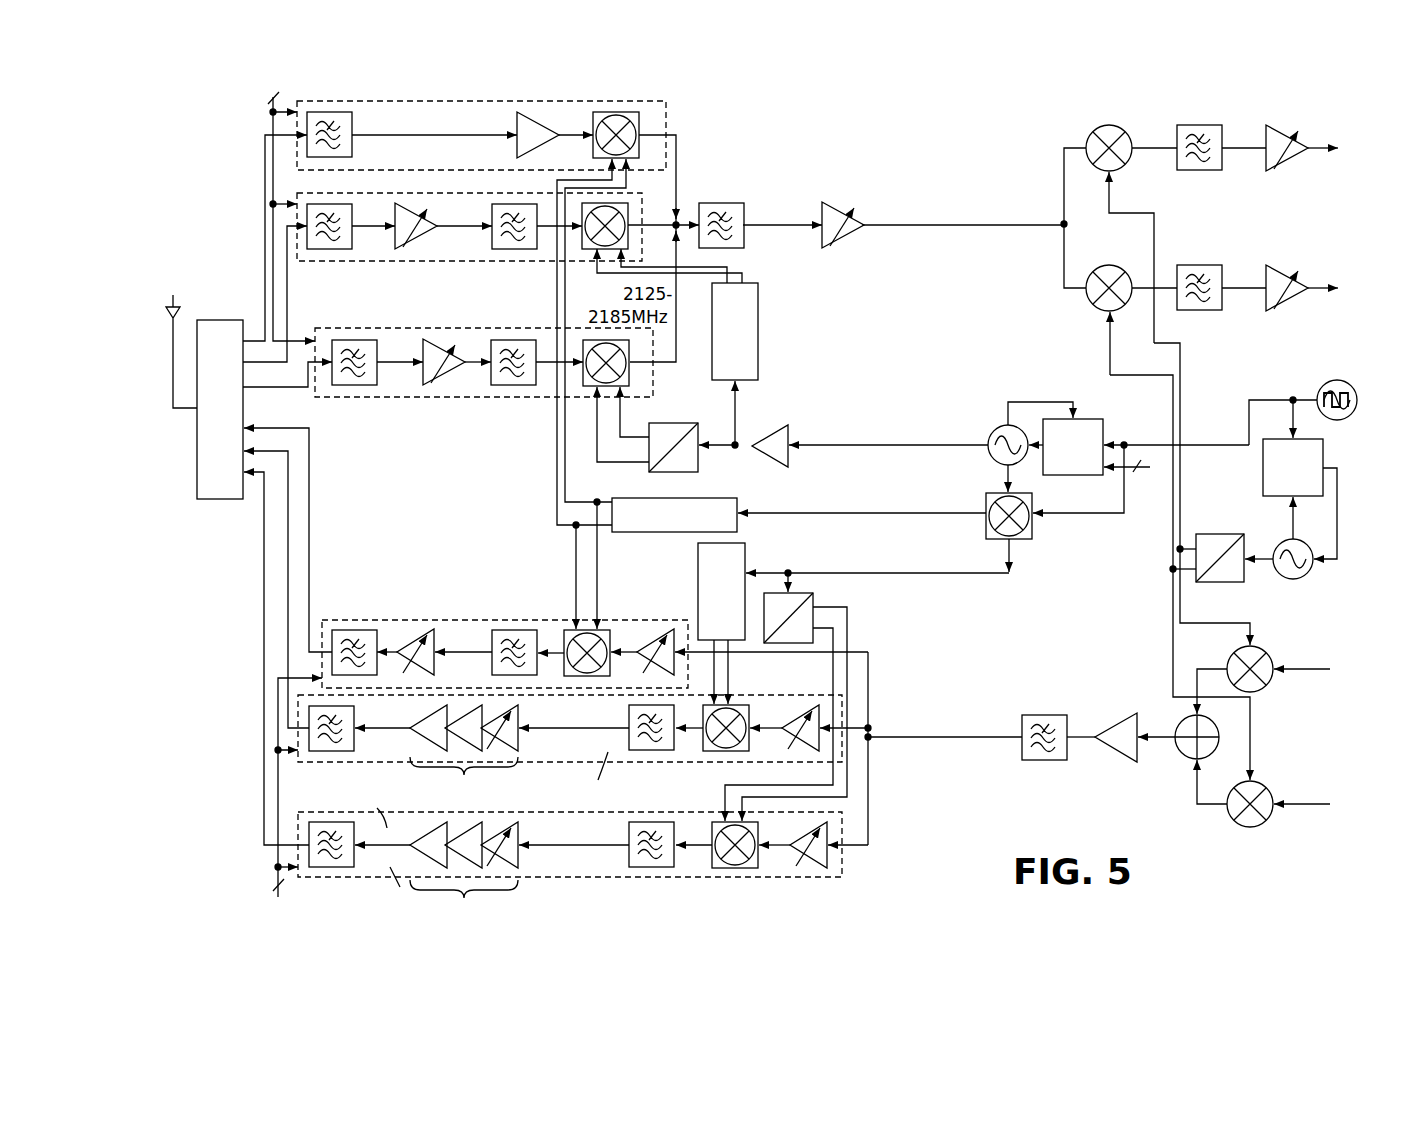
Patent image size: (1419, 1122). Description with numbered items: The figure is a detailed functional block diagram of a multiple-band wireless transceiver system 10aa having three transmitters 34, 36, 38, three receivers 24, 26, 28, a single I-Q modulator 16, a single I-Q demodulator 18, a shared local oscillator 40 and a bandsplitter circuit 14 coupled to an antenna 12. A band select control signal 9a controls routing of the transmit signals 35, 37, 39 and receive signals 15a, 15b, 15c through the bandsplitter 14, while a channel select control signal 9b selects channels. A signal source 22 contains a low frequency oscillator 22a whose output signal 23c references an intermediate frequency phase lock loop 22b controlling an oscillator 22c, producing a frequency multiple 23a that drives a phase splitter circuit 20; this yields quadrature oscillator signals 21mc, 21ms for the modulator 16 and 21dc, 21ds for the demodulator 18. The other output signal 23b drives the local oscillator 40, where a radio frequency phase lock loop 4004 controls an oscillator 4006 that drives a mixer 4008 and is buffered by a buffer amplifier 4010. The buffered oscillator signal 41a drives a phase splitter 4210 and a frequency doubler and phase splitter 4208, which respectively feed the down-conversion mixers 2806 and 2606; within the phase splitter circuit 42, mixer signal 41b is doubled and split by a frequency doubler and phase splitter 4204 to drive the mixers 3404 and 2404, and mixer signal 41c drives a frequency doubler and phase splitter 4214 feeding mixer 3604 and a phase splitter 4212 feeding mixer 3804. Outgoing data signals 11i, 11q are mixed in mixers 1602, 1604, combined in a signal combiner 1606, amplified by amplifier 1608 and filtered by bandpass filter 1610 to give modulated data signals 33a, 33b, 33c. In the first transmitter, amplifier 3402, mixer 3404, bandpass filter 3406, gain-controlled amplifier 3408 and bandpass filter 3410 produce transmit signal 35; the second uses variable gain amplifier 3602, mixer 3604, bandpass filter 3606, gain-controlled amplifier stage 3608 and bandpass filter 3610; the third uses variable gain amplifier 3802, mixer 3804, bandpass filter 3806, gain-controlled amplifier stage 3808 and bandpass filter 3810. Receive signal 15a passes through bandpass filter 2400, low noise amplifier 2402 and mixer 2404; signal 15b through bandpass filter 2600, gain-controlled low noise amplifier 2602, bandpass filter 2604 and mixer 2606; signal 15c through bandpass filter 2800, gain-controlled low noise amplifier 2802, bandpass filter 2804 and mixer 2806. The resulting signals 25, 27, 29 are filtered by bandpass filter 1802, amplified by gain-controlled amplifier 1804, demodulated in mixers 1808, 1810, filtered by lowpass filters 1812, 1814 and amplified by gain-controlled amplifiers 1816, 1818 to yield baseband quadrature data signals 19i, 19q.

The band select control signal 9a is at (268, 128).
The channel select control signal 9b is at (1132, 472).
The multiple-band wireless transceiver system 10aa is at (978, 120).
The quadrature outgoing data signal 11i is at (1327, 676).
The quadrature outgoing data signal 11q is at (1316, 807).
The antenna 12 is at (173, 295).
The bandsplitter circuit 14 is at (197, 460).
The incoming receive signal 15a is at (265, 178).
The incoming receive signal 15b is at (287, 252).
The incoming receive signal 15c is at (250, 388).
The I-Q modulator 16 is at (1113, 805).
The I-Q demodulator 18 is at (952, 249).
The baseband quadrature data signal 19i is at (1322, 147).
The baseband quadrature data signal 19q is at (1323, 287).
The phase splitter circuit 20 is at (1204, 531).
The quadrature oscillator signal 21dc is at (1154, 225).
The quadrature oscillator signal 21ds is at (1110, 351).
The quadrature oscillator signal 21mc is at (1210, 623).
The quadrature oscillator signal 21ms is at (1175, 645).
The signal source 22 is at (1367, 520).
The low frequency oscillator 22a is at (1357, 400).
The intermediate frequency phase lock loop 22b is at (1263, 477).
The oscillator 22c is at (1293, 580).
The frequency multiple signal 23a is at (1263, 562).
The output signal 23b is at (1233, 445).
The output signal 23c is at (1293, 418).
The first receiver circuit 24 is at (405, 101).
The incoming receive signal 25 is at (676, 141).
The second receiver 26 is at (432, 262).
The incoming receive signal 27 is at (654, 222).
The third receiver 28 is at (468, 398).
The incoming receive signal 29 is at (678, 360).
The modulated data signal 33a is at (868, 661).
The modulated data signal 33b is at (857, 722).
The modulated data signal 33c is at (870, 828).
The first transmitter 34 is at (322, 668).
The transmit signal 35 is at (307, 542).
The second transmitter 36 is at (298, 738).
The transmit signal 37 is at (288, 575).
The third transmitter 38 is at (298, 838).
The transmit signal 39 is at (264, 604).
The local oscillator 40 is at (1040, 426).
The oscillator signal 41a is at (745, 462).
The mixer signal 41b is at (930, 515).
The mixer signal 41c is at (885, 575).
The phase splitter circuit 42 is at (720, 490).
The mixer 1602 is at (1264, 688).
The mixer 1604 is at (1250, 828).
The signal combiner 1606 is at (1185, 753).
The amplifier 1608 is at (1123, 720).
The bandpass filter 1610 is at (1047, 768).
The bandpass filter 1802 is at (743, 210).
The gain-controlled amplifier 1804 is at (832, 204).
The mixer 1808 is at (1110, 125).
The mixer 1810 is at (1109, 265).
The lowpass filter 1812 is at (1200, 125).
The lowpass filter 1814 is at (1202, 265).
The gain-controlled amplifier 1816 is at (1272, 127).
The gain-controlled amplifier 1818 is at (1275, 267).
The bandpass filter 2400 is at (328, 112).
The low noise amplifier 2402 is at (527, 112).
The mixer 2404 is at (628, 112).
The bandpass filter 2600 is at (337, 251).
The gain-controlled low noise amplifier 2602 is at (405, 249).
The bandpass filter 2604 is at (512, 249).
The mixer 2606 is at (598, 251).
The bandpass filter 2800 is at (357, 387).
The gain-controlled low noise amplifier 2802 is at (432, 385).
The bandpass filter 2804 is at (525, 385).
The mixer 2806 is at (629, 378).
The amplifier 3402 is at (660, 617).
The mixer 3404 is at (548, 617).
The bandpass filter 3406 is at (498, 630).
The gain-controlled amplifier 3408 is at (417, 630).
The bandpass filter 3410 is at (340, 630).
The variable gain amplifier 3602 is at (805, 702).
The mixer 3604 is at (710, 753).
The bandpass filter 3606 is at (675, 753).
The gain-controlled amplifier stage 3608 is at (440, 766).
The bandpass filter 3610 is at (327, 753).
The variable gain amplifier 3802 is at (820, 867).
The mixer 3804 is at (733, 868).
The bandpass filter 3806 is at (650, 868).
The gain-controlled amplifier stage 3808 is at (440, 873).
The bandpass filter 3810 is at (342, 870).
The radio frequency phase lock loop 4004 is at (1103, 427).
The oscillator 4006 is at (990, 457).
The mixer 4008 is at (1025, 540).
The buffer amplifier 4010 is at (788, 458).
The frequency doubler and phase splitter 4204 is at (624, 535).
The frequency doubler and phase splitter 4208 is at (748, 381).
The phase splitter 4210 is at (655, 471).
The phase splitter 4212 is at (807, 595).
The frequency doubler and phase splitter 4214 is at (698, 572).